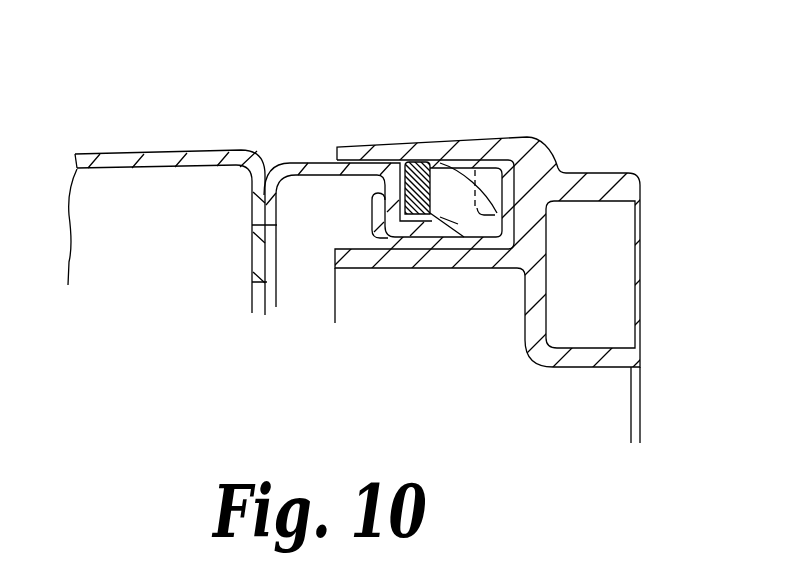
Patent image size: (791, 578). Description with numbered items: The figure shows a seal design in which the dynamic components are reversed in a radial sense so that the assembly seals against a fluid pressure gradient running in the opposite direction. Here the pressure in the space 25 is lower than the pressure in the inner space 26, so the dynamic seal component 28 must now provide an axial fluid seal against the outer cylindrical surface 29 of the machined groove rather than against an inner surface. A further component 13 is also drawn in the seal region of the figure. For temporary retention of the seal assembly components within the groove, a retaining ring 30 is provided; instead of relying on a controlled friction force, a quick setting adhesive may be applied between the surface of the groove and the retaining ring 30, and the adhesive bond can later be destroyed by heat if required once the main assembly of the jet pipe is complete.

The space 25 is at (268, 117).
The dynamic seal component 28 is at (313, 164).
The sealing block 13 is at (424, 163).
The outer cylindrical surface 29 is at (473, 158).
The retaining ring 30 is at (415, 243).
The inner space 26 is at (425, 337).